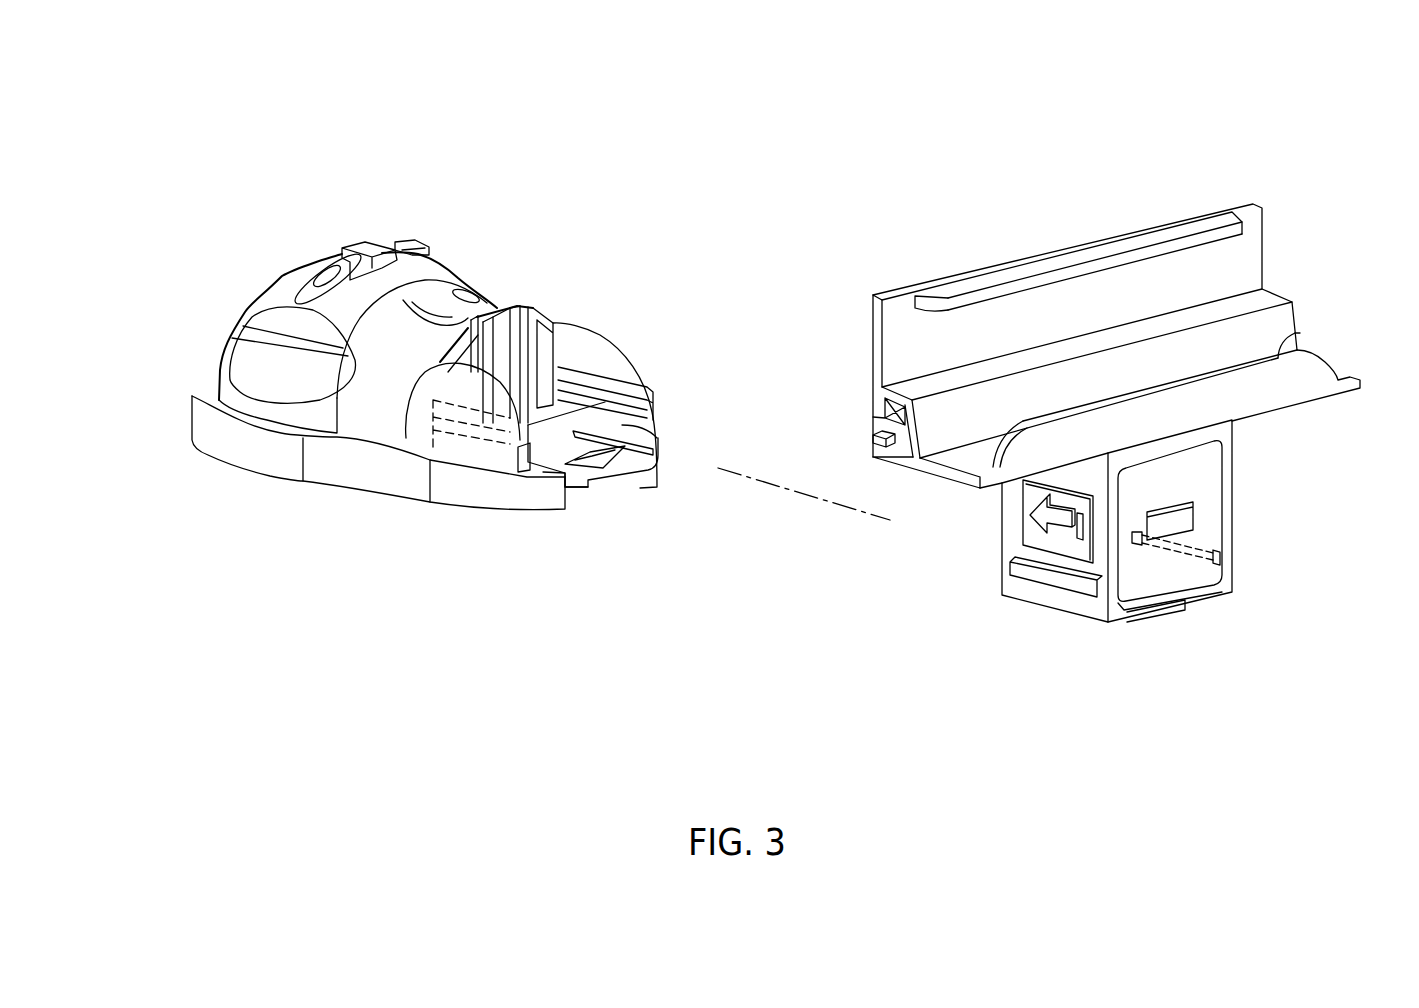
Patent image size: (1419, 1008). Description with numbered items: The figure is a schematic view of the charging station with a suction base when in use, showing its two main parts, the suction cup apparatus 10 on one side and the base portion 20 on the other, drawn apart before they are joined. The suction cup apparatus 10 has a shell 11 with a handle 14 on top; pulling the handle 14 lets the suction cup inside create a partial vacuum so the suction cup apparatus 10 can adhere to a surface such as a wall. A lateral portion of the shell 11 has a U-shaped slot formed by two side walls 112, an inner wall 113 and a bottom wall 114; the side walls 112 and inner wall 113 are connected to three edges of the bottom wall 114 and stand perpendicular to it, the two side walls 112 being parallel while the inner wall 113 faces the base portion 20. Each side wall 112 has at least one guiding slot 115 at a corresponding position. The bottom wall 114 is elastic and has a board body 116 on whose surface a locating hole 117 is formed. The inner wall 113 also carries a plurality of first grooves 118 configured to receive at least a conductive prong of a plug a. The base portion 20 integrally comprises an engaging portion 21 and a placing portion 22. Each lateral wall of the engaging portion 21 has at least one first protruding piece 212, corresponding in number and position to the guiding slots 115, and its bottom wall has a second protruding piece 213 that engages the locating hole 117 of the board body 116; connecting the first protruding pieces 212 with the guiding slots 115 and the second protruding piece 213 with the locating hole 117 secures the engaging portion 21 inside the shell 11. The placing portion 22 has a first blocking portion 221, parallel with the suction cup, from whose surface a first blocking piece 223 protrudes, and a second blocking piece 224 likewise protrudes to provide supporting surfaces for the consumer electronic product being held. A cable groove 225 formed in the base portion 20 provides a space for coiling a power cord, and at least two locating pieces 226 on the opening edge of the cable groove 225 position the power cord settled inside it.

The suction cup apparatus 10 is at (354, 233).
The shell 11 is at (238, 347).
The handle 14 is at (318, 265).
The first grooves 118 is at (452, 322).
The inner wall 113 is at (497, 313).
The side walls 112 is at (585, 342).
The guiding slot 115 is at (606, 397).
The board body 116 is at (620, 477).
The locating hole 117 is at (620, 432).
The bottom wall 114 is at (543, 473).
The base portion 20 is at (1247, 613).
The engaging portion 21 is at (1000, 553).
The first protruding piece 212 is at (1055, 581).
The second protruding piece 213 is at (1160, 615).
The plug a is at (1207, 480).
The placing portion 22 is at (1278, 215).
The first blocking portion 221 is at (900, 315).
The first blocking piece 223 is at (1300, 333).
The second blocking piece 224 is at (1083, 260).
The cable groove 225 is at (885, 408).
The locating pieces 226 is at (873, 440).